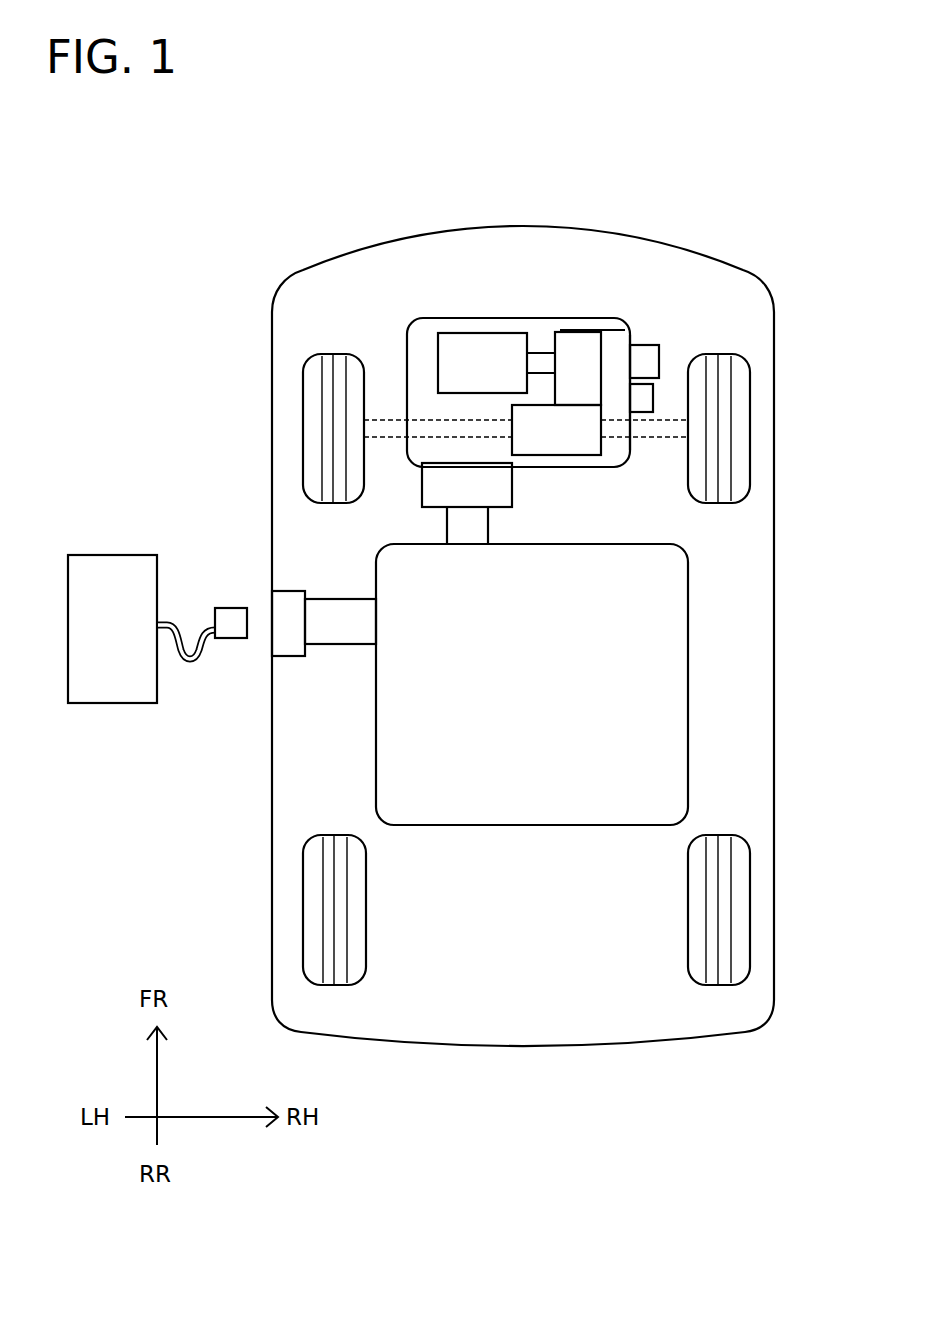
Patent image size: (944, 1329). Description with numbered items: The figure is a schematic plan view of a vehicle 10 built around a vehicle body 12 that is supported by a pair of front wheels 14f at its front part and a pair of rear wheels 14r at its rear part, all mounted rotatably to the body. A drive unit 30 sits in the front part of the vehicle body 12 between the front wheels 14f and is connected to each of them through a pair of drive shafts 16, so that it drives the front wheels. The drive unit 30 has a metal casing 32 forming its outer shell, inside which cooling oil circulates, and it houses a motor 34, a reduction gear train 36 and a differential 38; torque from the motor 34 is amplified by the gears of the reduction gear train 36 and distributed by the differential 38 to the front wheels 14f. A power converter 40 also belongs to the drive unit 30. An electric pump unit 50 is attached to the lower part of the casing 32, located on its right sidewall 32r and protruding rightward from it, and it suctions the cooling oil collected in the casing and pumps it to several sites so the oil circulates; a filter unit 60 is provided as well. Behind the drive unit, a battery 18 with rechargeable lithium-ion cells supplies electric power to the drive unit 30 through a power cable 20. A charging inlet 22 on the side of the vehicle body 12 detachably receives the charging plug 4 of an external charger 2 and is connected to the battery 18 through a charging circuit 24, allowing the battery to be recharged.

The vehicle 10 is at (777, 143).
The vehicle body 12 is at (738, 585).
The front wheels 14f is at (312, 420).
The rear wheels 14r is at (322, 913).
The drive shafts 16 is at (385, 428).
The battery 18 is at (660, 705).
The power cable 20 is at (483, 535).
The charging inlet 22 is at (287, 648).
The charging circuit 24 is at (333, 600).
The charger 2 is at (98, 612).
The charging plug 4 is at (232, 623).
The drive unit 30 is at (608, 328).
The casing 32 is at (582, 325).
The right sidewall 32r is at (631, 340).
The motor 34 is at (482, 367).
The reduction gear train 36 is at (580, 343).
The differential 38 is at (550, 415).
The power converter 40 is at (442, 482).
The electric pump unit 50 is at (648, 397).
The filter unit 60 is at (648, 360).